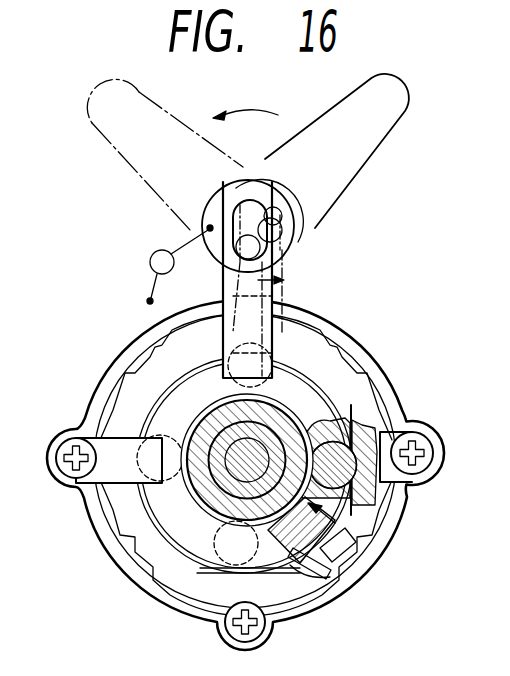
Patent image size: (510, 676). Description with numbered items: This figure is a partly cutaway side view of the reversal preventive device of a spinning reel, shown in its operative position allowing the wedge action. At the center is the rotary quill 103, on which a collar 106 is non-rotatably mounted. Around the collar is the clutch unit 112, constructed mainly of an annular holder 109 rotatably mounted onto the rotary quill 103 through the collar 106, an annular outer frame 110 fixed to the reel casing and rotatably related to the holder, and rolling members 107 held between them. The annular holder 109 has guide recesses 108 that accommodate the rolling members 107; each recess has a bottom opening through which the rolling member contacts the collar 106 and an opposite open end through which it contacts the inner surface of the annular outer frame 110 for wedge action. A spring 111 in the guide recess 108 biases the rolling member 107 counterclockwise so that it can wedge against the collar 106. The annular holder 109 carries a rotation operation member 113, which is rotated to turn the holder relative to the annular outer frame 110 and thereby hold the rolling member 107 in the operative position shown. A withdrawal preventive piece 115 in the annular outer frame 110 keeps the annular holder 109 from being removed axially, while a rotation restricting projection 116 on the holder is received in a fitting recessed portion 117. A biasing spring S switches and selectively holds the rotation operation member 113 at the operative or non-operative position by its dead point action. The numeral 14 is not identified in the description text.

The operating lever 14 is at (213, 203).
The biasing spring S is at (147, 301).
The rotary quill 103 is at (250, 500).
The collar 106 is at (190, 486).
The rolling members 107 is at (340, 477).
The guide recesses 108 is at (350, 497).
The annular holder 109 is at (190, 387).
The annular outer frame 110 is at (370, 402).
The spring 111 is at (362, 544).
The clutch unit 112 is at (387, 348).
The rotation operation member 113 is at (284, 295).
The withdrawal preventive piece 115 is at (133, 440).
The rotation restricting projection 116 is at (345, 570).
The fitting recessed portion 117 is at (310, 556).